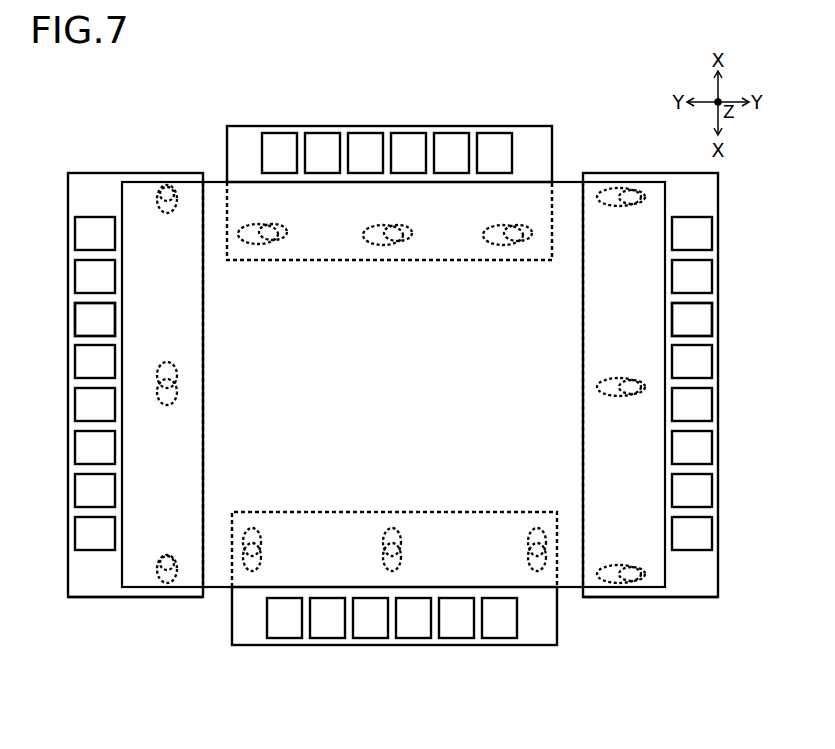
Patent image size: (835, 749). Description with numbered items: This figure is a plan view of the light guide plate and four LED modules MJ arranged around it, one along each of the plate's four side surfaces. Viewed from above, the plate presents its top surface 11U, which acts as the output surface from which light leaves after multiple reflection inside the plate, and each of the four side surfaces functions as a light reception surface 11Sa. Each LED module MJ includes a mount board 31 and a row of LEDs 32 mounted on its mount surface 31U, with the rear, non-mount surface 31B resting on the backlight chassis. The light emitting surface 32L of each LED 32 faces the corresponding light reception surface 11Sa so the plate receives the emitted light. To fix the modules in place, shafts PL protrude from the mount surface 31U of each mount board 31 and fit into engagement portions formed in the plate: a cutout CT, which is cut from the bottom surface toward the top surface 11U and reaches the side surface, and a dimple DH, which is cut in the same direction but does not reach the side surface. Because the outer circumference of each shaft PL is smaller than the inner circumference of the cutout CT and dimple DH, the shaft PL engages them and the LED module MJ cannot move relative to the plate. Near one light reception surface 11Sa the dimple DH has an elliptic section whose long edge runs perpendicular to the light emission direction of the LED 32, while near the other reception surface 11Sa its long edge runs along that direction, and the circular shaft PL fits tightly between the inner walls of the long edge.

The top surface 11U is at (393, 384).
The light reception surface 11Sa is at (217, 182).
The mount board 31 is at (552, 160).
The LED 32 is at (499, 153).
The mount surface 31U is at (98, 590).
The non-mount surface 31B is at (152, 588).
The light emitting surface 32L is at (115, 309).
The LED module MJ is at (600, 100).
The shaft PL is at (161, 212).
The dimple DH is at (262, 245).
The cutout CT is at (174, 212).